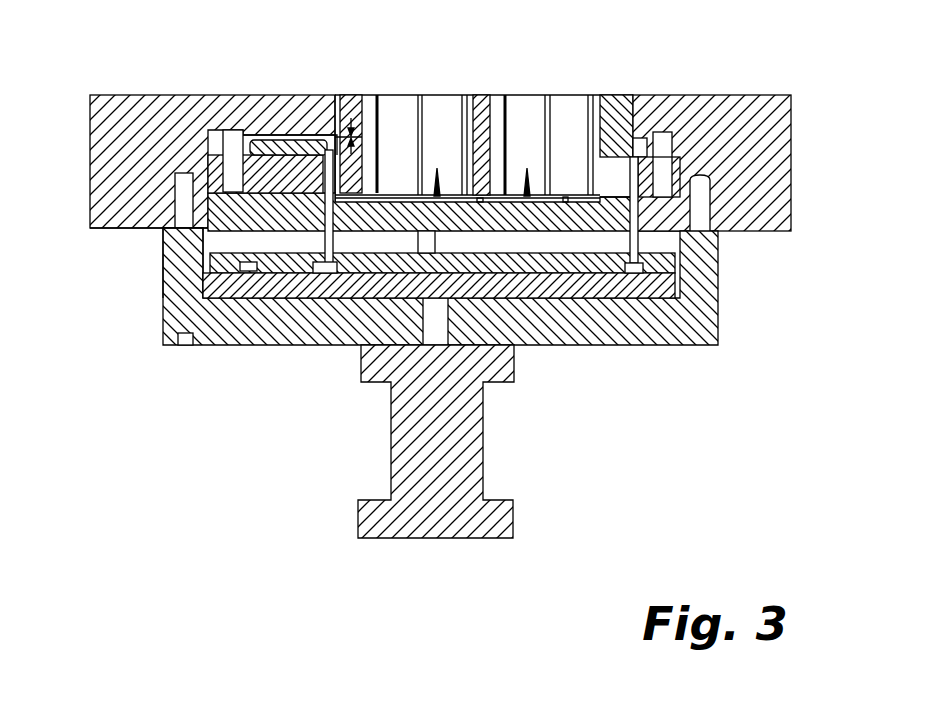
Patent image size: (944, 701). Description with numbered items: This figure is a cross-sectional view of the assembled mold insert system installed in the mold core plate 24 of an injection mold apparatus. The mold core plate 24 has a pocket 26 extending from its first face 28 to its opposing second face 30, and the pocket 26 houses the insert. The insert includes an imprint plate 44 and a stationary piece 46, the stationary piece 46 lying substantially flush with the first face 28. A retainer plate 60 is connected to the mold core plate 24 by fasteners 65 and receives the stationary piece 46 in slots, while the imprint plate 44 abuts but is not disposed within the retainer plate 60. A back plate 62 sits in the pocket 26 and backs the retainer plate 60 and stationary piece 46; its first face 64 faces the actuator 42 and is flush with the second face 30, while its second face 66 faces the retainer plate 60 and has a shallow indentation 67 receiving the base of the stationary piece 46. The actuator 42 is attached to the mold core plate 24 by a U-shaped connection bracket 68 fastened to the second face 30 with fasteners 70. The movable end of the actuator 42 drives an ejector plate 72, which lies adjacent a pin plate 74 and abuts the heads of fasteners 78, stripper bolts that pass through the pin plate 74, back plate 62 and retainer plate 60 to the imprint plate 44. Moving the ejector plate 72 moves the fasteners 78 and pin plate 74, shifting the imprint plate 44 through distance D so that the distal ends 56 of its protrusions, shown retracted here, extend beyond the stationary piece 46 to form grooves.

The mold core plate 24 is at (791, 120).
The pocket 26 is at (632, 95).
The first face 28 is at (99, 99).
The second face 30 is at (121, 222).
The actuator 42 is at (462, 440).
The imprint plate 44 is at (312, 124).
The stationary piece 46 is at (563, 95).
The distal end 56 is at (418, 95).
The retainer plate 60 is at (301, 195).
The back plate 62 is at (637, 243).
The first face 64 is at (210, 193).
The fasteners 65 is at (240, 128).
The second face 66 is at (180, 238).
The shallow indentation 67 is at (640, 205).
The connection bracket 68 is at (238, 327).
The fasteners 70 is at (178, 185).
The ejector plate 72 is at (624, 283).
The pin plate 74 is at (668, 265).
The fasteners 78 is at (680, 250).
The distance D is at (362, 133).